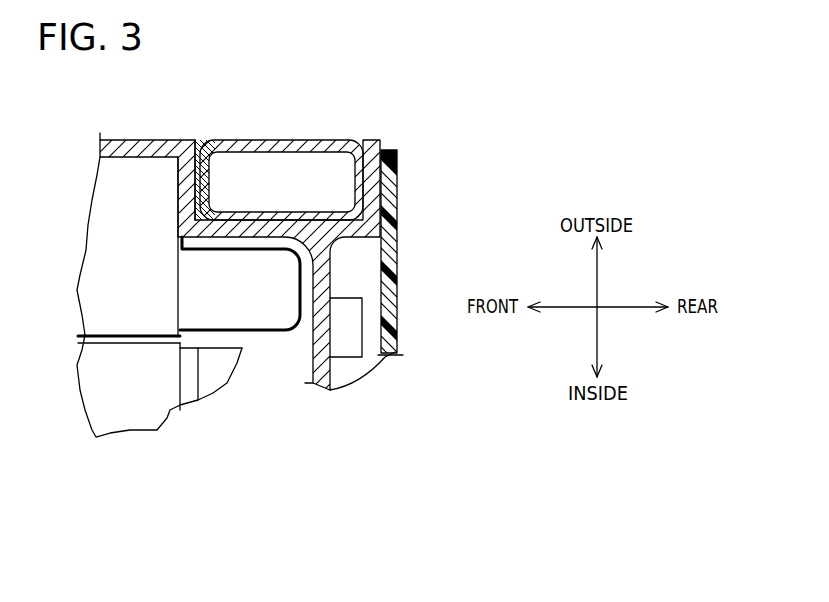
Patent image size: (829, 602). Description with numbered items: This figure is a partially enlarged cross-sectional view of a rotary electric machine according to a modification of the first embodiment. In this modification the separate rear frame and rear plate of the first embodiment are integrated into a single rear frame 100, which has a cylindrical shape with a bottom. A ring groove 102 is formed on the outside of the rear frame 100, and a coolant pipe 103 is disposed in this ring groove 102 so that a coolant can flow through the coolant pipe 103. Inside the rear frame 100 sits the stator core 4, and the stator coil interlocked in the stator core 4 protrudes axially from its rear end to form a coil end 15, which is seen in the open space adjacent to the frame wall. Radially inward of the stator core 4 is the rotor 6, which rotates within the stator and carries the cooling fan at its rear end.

The stator core 4 is at (128, 170).
The rotor 6 is at (158, 408).
The coil end 15 is at (222, 298).
The rear frame 100 is at (172, 147).
The ring groove 102 is at (203, 140).
The coolant pipe 103 is at (281, 140).